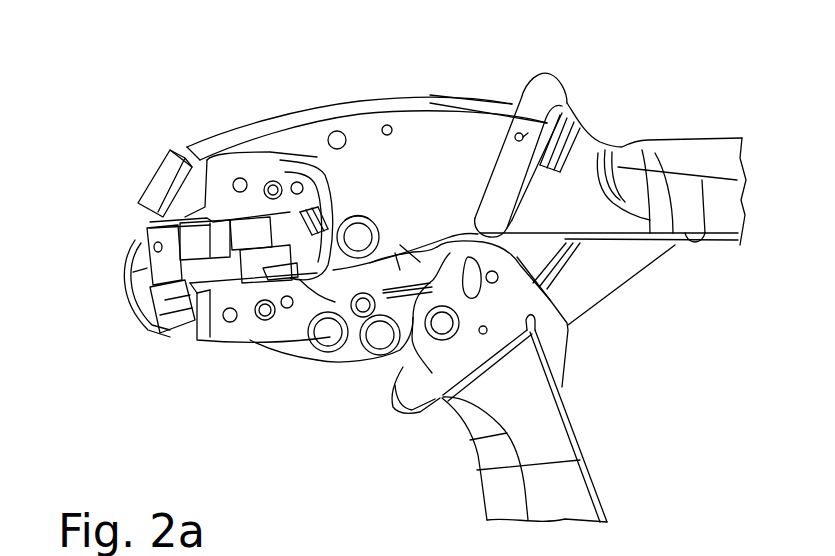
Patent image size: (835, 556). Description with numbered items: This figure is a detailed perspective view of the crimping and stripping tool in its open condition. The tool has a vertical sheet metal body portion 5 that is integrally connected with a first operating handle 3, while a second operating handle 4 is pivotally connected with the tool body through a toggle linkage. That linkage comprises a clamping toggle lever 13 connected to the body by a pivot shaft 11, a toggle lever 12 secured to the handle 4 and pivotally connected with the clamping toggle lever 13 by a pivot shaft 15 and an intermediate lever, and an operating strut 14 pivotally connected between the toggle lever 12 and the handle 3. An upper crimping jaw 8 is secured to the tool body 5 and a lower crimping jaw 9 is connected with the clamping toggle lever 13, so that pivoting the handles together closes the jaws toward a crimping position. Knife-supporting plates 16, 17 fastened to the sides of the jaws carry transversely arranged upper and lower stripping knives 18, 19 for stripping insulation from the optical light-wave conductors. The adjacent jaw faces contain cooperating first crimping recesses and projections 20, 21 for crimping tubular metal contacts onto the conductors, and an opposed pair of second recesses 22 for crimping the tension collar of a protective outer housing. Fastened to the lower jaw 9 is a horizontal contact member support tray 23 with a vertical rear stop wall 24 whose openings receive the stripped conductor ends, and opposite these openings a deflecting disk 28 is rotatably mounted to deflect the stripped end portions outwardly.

The first operating handle 3 is at (722, 207).
The second operating handle 4 is at (600, 483).
The vertical sheet metal body portion 5 is at (358, 128).
The upper crimping jaw 8 is at (190, 183).
The lower crimping jaw 9 is at (167, 323).
The pivot shaft 11 is at (363, 233).
The toggle lever 12 is at (522, 252).
The clamping toggle lever 13 is at (348, 355).
The operating strut 14 is at (620, 255).
The pivot shaft 15 is at (440, 330).
The knife-supporting plate 16 is at (318, 185).
The knife-supporting plate 17 is at (305, 312).
The upper stripping knife 18 is at (313, 230).
The lower stripping knife 19 is at (300, 290).
The first crimping recesses 20 is at (260, 257).
The first crimping projections 21 is at (230, 230).
The second recesses 22 is at (133, 277).
The contact member support tray 23 is at (202, 338).
The rear stop wall 24 is at (153, 223).
The deflecting disk 28 is at (125, 316).